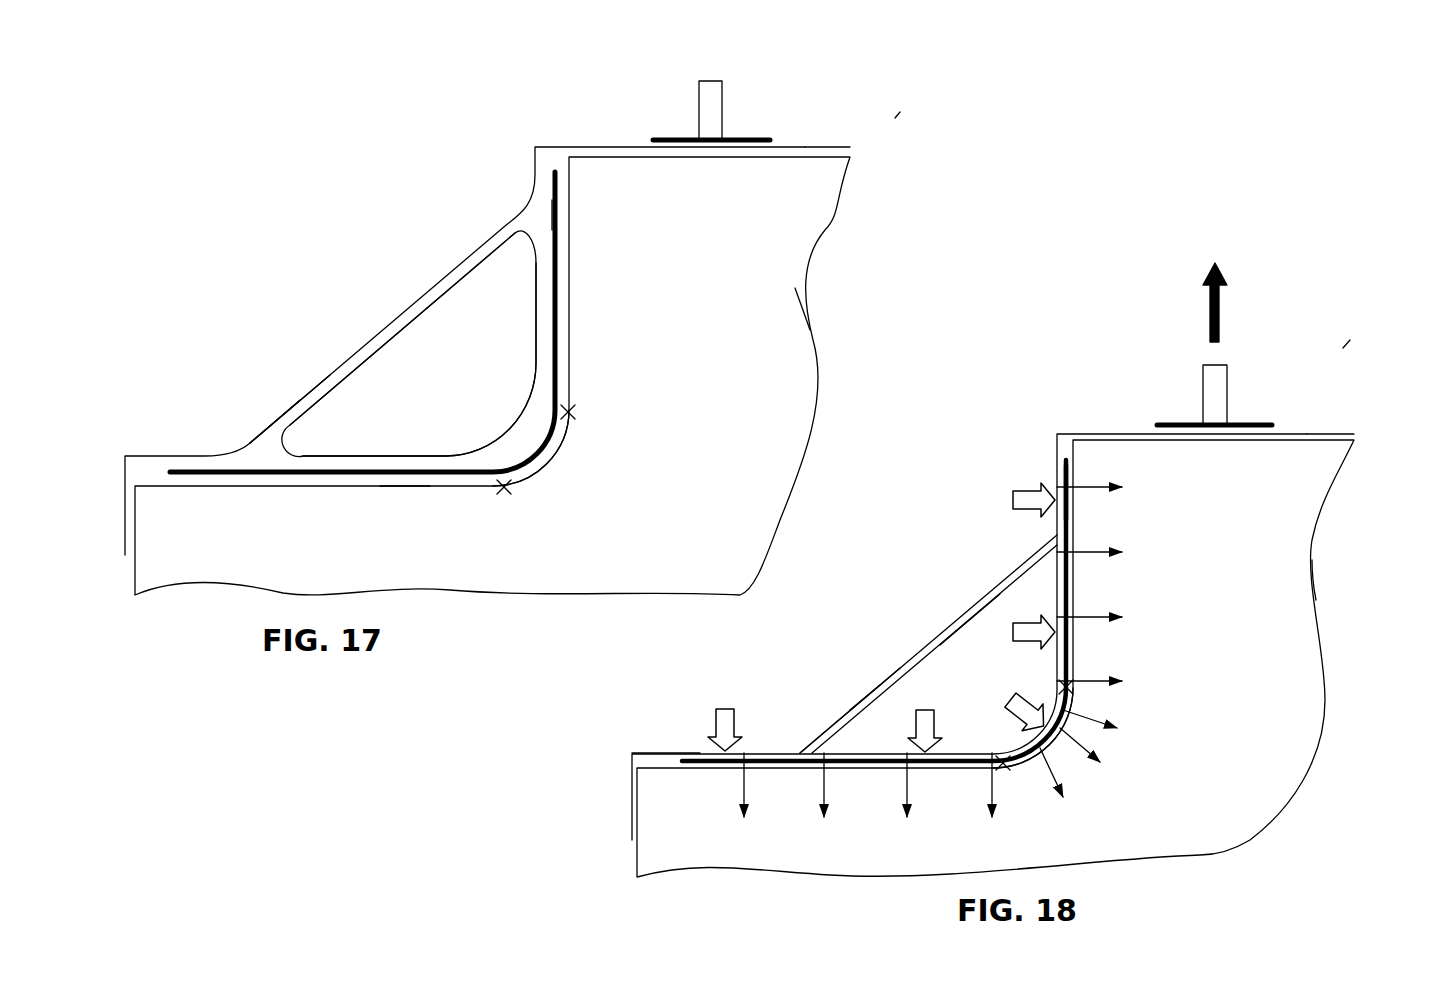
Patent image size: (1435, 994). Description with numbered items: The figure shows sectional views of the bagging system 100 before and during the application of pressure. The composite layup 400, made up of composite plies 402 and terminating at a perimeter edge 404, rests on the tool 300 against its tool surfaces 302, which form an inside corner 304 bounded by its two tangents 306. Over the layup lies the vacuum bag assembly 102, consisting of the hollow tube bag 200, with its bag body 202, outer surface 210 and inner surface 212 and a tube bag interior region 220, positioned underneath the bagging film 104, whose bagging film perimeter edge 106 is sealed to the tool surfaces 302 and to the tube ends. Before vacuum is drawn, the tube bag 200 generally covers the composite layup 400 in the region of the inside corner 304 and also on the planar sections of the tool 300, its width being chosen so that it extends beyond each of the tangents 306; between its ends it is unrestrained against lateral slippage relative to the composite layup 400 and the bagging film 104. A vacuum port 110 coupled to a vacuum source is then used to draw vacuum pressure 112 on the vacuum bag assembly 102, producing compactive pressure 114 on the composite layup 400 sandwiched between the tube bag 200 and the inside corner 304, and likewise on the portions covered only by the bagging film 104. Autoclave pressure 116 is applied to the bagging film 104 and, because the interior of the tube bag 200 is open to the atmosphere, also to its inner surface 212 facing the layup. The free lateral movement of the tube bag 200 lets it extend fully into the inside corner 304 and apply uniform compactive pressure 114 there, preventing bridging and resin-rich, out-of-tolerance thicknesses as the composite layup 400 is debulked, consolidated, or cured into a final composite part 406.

In FIG. 17, the bagging system 100 is at (896, 117).
In FIG. 18, the bagging system 100 is at (1345, 347).
In FIG. 17, the vacuum bag assembly 102 is at (282, 415).
In FIG. 18, the vacuum bag assembly 102 is at (873, 679).
In FIG. 17, the bagging film 104 is at (327, 378).
In FIG. 18, the bagging film 104 is at (648, 750).
In FIG. 17, the bagging film perimeter edge 106 is at (805, 147).
In FIG. 18, the bagging film perimeter edge 106 is at (1308, 434).
In FIG. 17, the vacuum port 110 is at (722, 105).
In FIG. 18, the vacuum port 110 is at (1227, 385).
In FIG. 18, the vacuum pressure 112 is at (1220, 298).
In FIG. 18, the compactive pressure 114 is at (744, 790).
In FIG. 18, the autoclave pressure 116 is at (1030, 508).
In FIG. 17, the tube bag 200 is at (398, 333).
In FIG. 18, the tube bag 200 is at (935, 632).
In FIG. 17, the bag body 202 is at (460, 285).
In FIG. 18, the bag body 202 is at (828, 723).
In FIG. 17, the outer surface 210 is at (405, 470).
In FIG. 17, the inner surface 212 is at (392, 458).
In FIG. 17, the bracket fillet / filler 220 is at (527, 285).
In FIG. 18, the bracket fillet / filler 220 is at (969, 607).
In FIG. 17, the tool 300 is at (795, 288).
In FIG. 18, the tool 300 is at (1313, 570).
In FIG. 17, the tool surface 302 is at (317, 488).
In FIG. 18, the tool surface 302 is at (1340, 438).
In FIG. 17, the inside corner 304 is at (548, 460).
In FIG. 18, the inside corner 304 is at (1047, 742).
In FIG. 17, the tangents 306 is at (572, 412).
In FIG. 18, the tangents 306 is at (1078, 690).
In FIG. 17, the composite layup 400 is at (552, 213).
In FIG. 17, the composite plies 402 is at (552, 188).
In FIG. 18, the composite plies 402 is at (693, 755).
In FIG. 17, the perimeter edge 404 is at (555, 170).
In FIG. 18, the perimeter edge 404 is at (1066, 458).
In FIG. 18, the final composite part 406 is at (1063, 467).